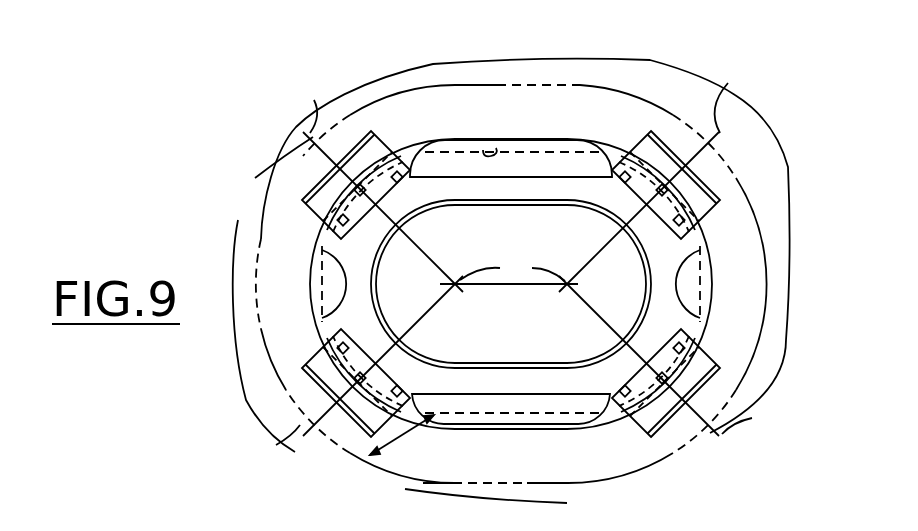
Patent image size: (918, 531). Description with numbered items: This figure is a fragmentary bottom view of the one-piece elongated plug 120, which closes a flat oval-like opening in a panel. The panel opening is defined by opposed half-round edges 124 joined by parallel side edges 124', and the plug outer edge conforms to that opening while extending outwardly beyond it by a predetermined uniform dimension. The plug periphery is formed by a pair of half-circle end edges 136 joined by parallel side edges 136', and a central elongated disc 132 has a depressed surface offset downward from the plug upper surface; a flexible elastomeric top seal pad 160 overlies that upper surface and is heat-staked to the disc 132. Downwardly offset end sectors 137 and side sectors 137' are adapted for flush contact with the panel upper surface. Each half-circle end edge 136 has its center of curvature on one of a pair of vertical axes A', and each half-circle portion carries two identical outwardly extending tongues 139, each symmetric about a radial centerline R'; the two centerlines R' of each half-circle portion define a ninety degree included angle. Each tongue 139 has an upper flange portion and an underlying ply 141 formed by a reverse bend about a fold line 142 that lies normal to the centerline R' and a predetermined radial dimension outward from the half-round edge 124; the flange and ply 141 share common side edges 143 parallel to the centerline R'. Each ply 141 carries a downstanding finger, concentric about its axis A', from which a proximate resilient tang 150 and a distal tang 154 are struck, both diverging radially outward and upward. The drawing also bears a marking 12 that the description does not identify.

The gap 12 is at (437, 424).
The elongated plug 120 is at (460, 120).
The half-round edges 124 is at (511, 284).
The parallel side edges 124' is at (526, 239).
The central elongated disc 132 is at (545, 233).
The half-circle end edges 136 is at (517, 281).
The parallel side edges 136' is at (495, 91).
The end sectors 137 is at (544, 306).
The side sectors 137' is at (398, 145).
The tongues 139 is at (367, 125).
The ply 141 is at (262, 170).
The fold line 142 is at (306, 173).
The common side edges 143 is at (466, 60).
The resilient tang 150 is at (347, 227).
The distal tang 154 is at (363, 175).
The top seal pad 160 is at (636, 84).
The vertical axes A' is at (509, 268).
The radial centerline of symmetry R' is at (519, 263).